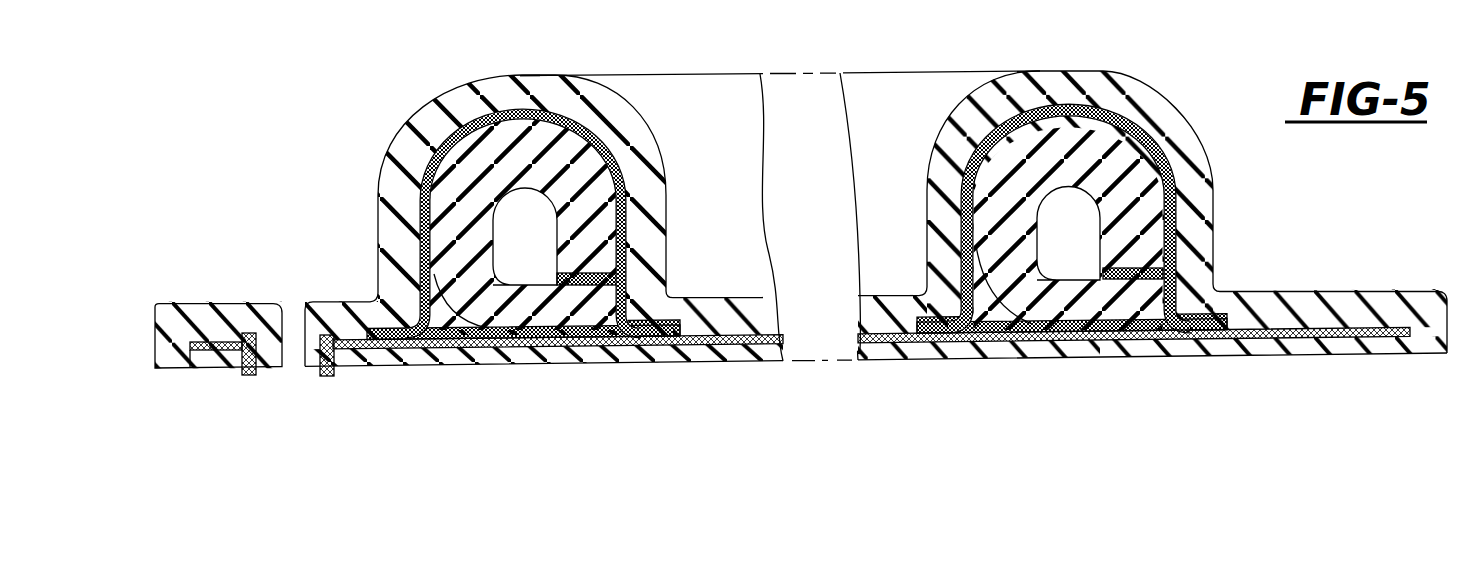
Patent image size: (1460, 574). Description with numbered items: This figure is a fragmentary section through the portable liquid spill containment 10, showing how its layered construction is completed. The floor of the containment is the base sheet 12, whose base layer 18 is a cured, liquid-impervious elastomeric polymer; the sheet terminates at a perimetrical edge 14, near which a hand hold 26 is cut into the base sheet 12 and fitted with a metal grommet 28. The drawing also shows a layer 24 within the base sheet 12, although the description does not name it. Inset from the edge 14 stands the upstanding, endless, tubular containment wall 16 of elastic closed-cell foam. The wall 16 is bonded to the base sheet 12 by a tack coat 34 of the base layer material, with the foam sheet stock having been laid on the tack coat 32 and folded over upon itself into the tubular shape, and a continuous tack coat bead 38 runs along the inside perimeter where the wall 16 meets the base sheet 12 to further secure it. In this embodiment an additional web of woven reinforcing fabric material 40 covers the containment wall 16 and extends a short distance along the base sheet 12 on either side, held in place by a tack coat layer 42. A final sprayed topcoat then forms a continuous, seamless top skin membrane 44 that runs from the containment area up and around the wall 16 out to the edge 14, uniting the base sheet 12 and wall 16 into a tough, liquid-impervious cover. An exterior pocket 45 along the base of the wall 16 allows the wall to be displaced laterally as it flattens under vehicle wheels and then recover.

The portable liquid spill containment 10 is at (363, 207).
The base sheet 12 is at (684, 370).
The perimetrical edge 14 is at (155, 302).
The containment wall 16 is at (653, 127).
The base layer 18 is at (484, 360).
The adhesive layer 24 is at (770, 346).
The hand hold 26 is at (249, 372).
The grommet 28 is at (258, 347).
The tack coat 32 is at (567, 337).
The tack coat 34 is at (603, 268).
The tack coat bead 38 is at (601, 341).
The woven reinforcing fabric material 40 is at (660, 197).
The tack coat layer 42 is at (628, 233).
The top skin membrane 44 is at (583, 98).
The pocket 45 is at (442, 327).